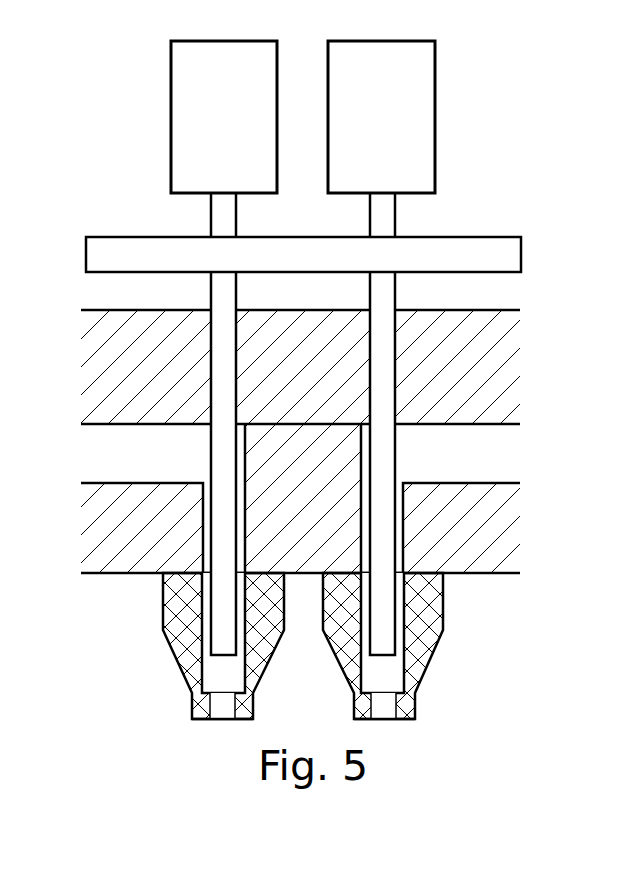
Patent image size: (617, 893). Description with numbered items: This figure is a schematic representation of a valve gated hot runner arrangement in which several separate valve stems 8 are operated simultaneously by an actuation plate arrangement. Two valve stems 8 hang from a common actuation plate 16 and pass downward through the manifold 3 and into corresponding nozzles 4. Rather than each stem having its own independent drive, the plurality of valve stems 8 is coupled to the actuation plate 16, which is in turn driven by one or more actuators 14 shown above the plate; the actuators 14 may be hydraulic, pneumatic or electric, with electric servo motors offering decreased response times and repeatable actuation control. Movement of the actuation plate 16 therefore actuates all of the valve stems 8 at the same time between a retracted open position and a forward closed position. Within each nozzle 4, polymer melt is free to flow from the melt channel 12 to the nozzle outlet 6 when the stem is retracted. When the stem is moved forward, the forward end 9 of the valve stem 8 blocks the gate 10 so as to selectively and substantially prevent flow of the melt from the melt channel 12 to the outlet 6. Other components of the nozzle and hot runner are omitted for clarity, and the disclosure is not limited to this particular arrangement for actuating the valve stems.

The manifold 3 is at (490, 352).
The nozzle 4 is at (182, 677).
The nozzle outlet 6 is at (222, 719).
The valve stem 8 is at (218, 298).
The forward end 9 is at (211, 655).
The gate 10 is at (210, 707).
The melt channel 12 is at (490, 457).
The actuator 14 is at (171, 106).
The actuation plate 16 is at (107, 251).